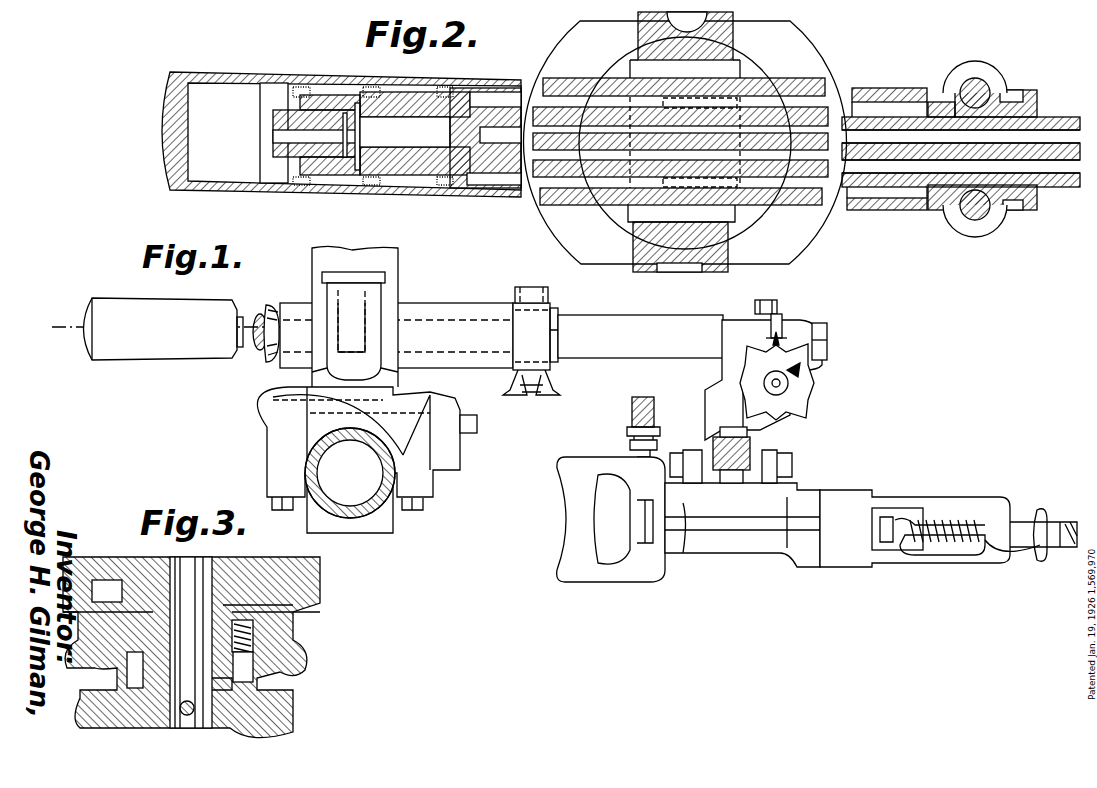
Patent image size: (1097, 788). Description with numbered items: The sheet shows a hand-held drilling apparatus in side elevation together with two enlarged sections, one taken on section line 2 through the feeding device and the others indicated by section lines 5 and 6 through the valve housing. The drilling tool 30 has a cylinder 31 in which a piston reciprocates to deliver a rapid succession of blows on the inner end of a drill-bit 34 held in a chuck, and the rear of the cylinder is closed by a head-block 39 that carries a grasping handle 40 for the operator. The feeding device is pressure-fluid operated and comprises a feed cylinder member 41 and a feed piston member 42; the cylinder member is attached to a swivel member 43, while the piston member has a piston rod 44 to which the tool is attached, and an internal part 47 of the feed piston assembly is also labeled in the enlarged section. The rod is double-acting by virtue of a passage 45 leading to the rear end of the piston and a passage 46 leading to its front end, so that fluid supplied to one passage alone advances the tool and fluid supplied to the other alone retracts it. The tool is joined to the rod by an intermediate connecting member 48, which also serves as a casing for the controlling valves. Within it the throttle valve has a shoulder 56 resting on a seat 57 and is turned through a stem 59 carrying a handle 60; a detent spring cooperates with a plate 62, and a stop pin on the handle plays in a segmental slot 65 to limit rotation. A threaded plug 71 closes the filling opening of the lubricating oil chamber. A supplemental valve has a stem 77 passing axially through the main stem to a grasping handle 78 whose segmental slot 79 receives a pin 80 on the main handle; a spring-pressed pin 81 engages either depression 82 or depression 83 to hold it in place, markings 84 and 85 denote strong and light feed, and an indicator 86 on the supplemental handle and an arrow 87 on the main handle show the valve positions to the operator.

In FIG. 1, the section line 2— 2 is at (56, 334).
In FIG. 1, the section line 5 is at (841, 352).
In FIG. 1, the section line 6 is at (769, 428).
In FIG. 1, the drilling tool 30 is at (909, 514).
In FIG. 1, the cylinder 31 is at (728, 555).
In FIG. 1, the drill-bit 34 is at (1013, 520).
In FIG. 1, the head-block 39 is at (603, 580).
In FIG. 1, the grasping handle 40 is at (565, 520).
In FIG. 2, the feed cylinder member 41 is at (604, 74).
In FIG. 1, the feed cylinder member 41 is at (434, 311).
In FIG. 2, the feed piston member 42 is at (403, 195).
In FIG. 2, the swivel member 43 is at (556, 233).
In FIG. 1, the swivel member 43 is at (405, 392).
In FIG. 2, the piston rod 44 is at (1062, 115).
In FIG. 1, the piston rod 44 is at (633, 321).
In FIG. 2, the passage 45 is at (862, 163).
In FIG. 1, the passage 45 is at (250, 358).
In FIG. 2, the passage 46 is at (884, 137).
In FIG. 1, the passage 46 is at (258, 312).
In FIG. 2, the piston 47 is at (285, 135).
In FIG. 1, the intermediate connecting member 48 is at (705, 393).
In FIG. 3, the intermediate connecting member 48 is at (320, 566).
In FIG. 3, the shoulder 56 is at (235, 566).
In FIG. 3, the seat 57 is at (285, 597).
In FIG. 3, the stem 59 is at (255, 636).
In FIG. 1, the handle 60 is at (790, 414).
In FIG. 3, the handle 60 is at (295, 675).
In FIG. 3, the plate 62 is at (300, 615).
In FIG. 3, the segmental slot 65 is at (100, 580).
In FIG. 1, the threaded plug 71 is at (782, 330).
In FIG. 1, the stem 77 is at (767, 370).
In FIG. 3, the stem 77 is at (185, 565).
In FIG. 1, the grasping handle 78 is at (745, 388).
In FIG. 3, the grasping handle 78 is at (285, 718).
In FIG. 3, the segmental slot 79 is at (127, 686).
In FIG. 3, the pin 80 is at (127, 665).
In FIG. 3, the spring-pressed pin 81 is at (255, 665).
In FIG. 1, the depression 82 is at (770, 367).
In FIG. 3, the depression 82 is at (250, 690).
In FIG. 1, the depression 83 is at (790, 388).
In FIG. 1, the marking 84 is at (800, 370).
In FIG. 1, the marking 85 is at (797, 395).
In FIG. 1, the arrow or indicator 86 is at (825, 333).
In FIG. 1, the arrow 87 is at (760, 338).